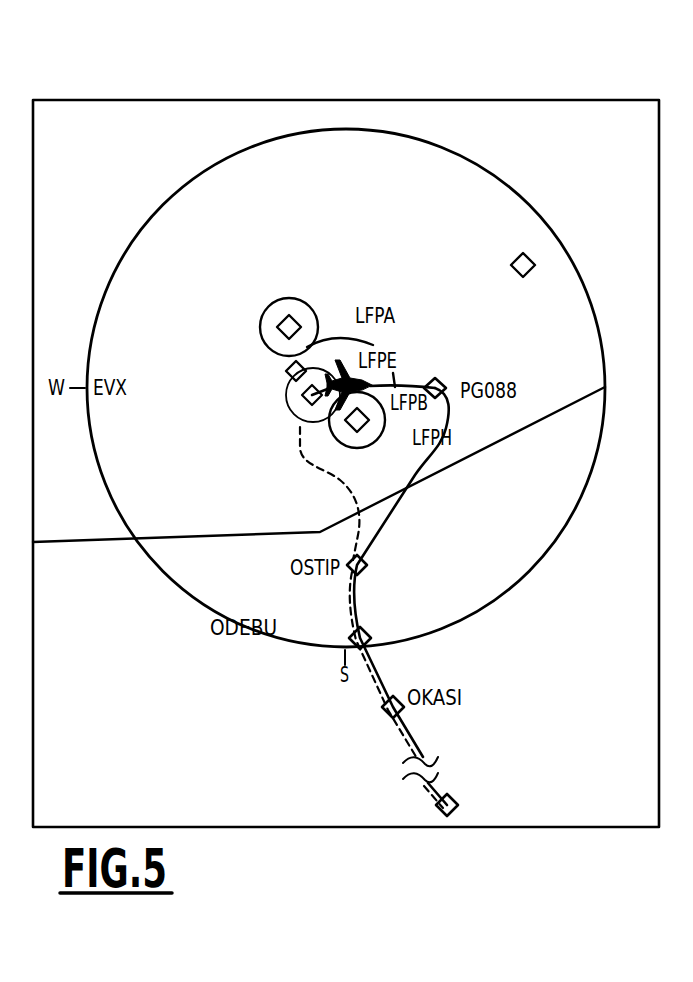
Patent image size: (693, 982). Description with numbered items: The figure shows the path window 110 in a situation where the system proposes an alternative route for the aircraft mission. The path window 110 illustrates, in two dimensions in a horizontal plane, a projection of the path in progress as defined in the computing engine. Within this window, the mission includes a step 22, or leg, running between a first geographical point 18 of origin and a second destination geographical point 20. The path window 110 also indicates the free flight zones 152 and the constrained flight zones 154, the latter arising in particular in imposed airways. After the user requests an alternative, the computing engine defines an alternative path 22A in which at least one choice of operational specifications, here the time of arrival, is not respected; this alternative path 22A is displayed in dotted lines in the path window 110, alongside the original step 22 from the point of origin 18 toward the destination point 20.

The path window 110 is at (329, 98).
The free flight zones 152 is at (527, 318).
The constrained flight zones 154 is at (527, 610).
The first geographical point of origin 18 is at (290, 413).
The step 22 is at (407, 493).
The alternative path 22A is at (333, 477).
The second destination geographical point 20 is at (457, 800).